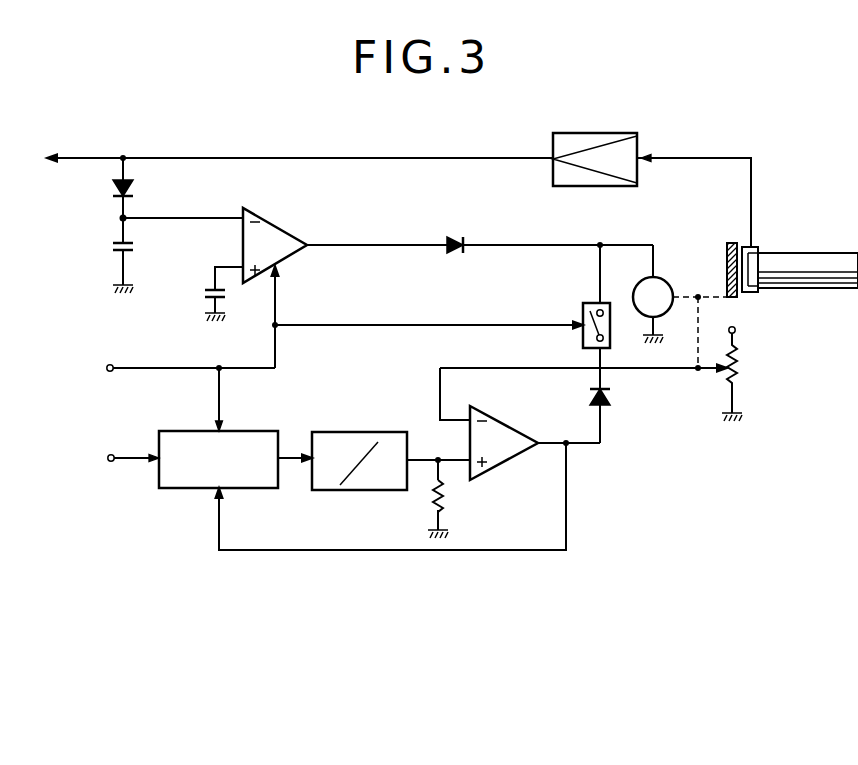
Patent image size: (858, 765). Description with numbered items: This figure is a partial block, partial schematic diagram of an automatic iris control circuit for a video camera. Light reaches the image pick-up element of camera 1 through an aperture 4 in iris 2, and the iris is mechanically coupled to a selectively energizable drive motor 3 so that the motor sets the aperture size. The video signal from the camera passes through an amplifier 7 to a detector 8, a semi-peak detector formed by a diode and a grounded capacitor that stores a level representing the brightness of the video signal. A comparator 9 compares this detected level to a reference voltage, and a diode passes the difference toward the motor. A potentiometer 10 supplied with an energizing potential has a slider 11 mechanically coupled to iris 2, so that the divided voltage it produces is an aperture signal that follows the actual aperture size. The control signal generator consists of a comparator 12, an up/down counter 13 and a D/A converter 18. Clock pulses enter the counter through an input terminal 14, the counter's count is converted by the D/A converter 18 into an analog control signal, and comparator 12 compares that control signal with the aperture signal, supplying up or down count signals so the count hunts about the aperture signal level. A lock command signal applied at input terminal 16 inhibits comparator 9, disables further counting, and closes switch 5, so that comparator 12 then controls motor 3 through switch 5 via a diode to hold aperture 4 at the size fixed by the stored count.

The camera 1 is at (800, 249).
The iris 2 is at (732, 240).
The drive motor 3 is at (661, 278).
The aperture 4 is at (727, 265).
The switch 5 is at (583, 308).
The amplifier 7 is at (640, 139).
The detector 8 is at (132, 211).
The comparator 9 is at (296, 206).
The potentiometer 10 is at (742, 368).
The slider 11 is at (710, 373).
The comparator 12 is at (511, 428).
The up/down counter 13 is at (254, 431).
The input terminal 14 is at (114, 454).
The input terminal 16 is at (113, 364).
The D/A converter 18 is at (355, 432).